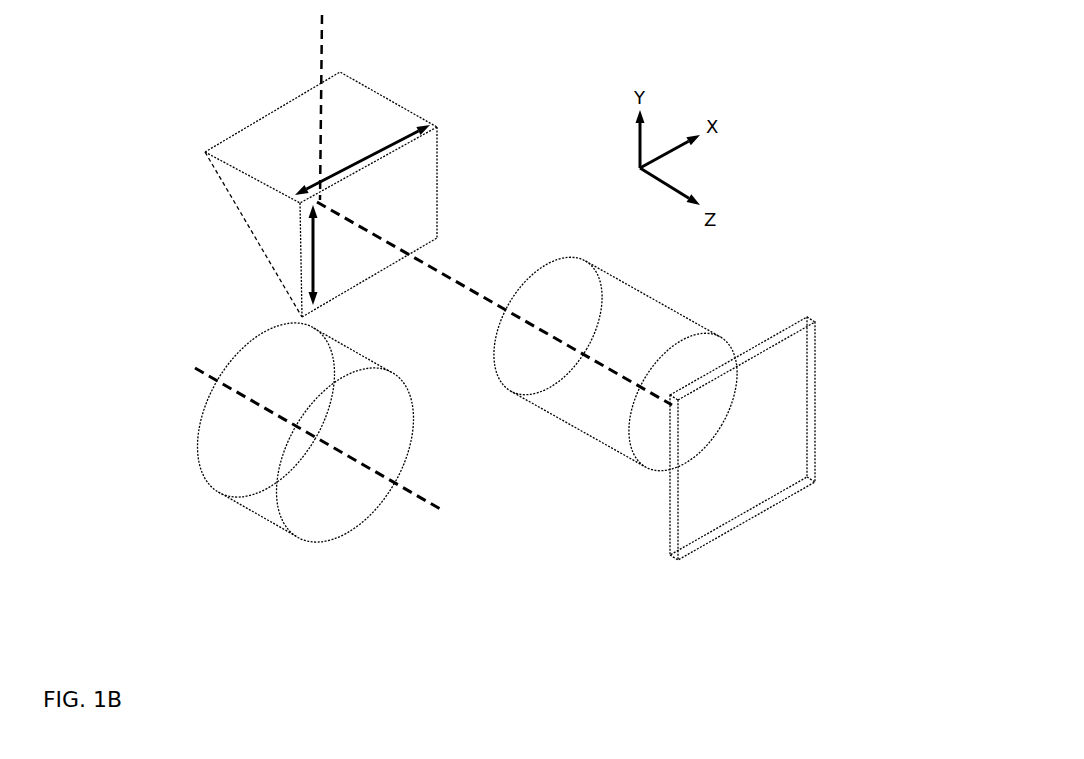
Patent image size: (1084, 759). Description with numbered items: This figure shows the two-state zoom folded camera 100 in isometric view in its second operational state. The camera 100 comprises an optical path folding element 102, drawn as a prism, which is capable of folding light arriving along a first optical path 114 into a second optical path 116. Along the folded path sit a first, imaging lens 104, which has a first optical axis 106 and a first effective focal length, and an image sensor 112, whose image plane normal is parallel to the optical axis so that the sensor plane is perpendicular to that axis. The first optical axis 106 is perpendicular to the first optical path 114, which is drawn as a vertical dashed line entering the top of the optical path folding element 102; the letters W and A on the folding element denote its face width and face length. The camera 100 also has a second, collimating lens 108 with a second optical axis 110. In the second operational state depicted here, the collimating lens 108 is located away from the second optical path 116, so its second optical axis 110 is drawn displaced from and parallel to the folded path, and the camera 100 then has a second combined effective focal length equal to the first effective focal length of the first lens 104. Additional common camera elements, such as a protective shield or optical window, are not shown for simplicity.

The two-state zoom folded camera 100 is at (528, 103).
The optical path folding element 102 is at (260, 220).
The first, imaging lens 104 is at (652, 297).
The first optical axis 106 is at (570, 348).
The second, collimating lens 108 is at (260, 515).
The second optical axis 110 is at (410, 495).
The image sensor 112 is at (672, 507).
The first optical path 114 is at (315, 63).
The second optical path 116 is at (478, 268).